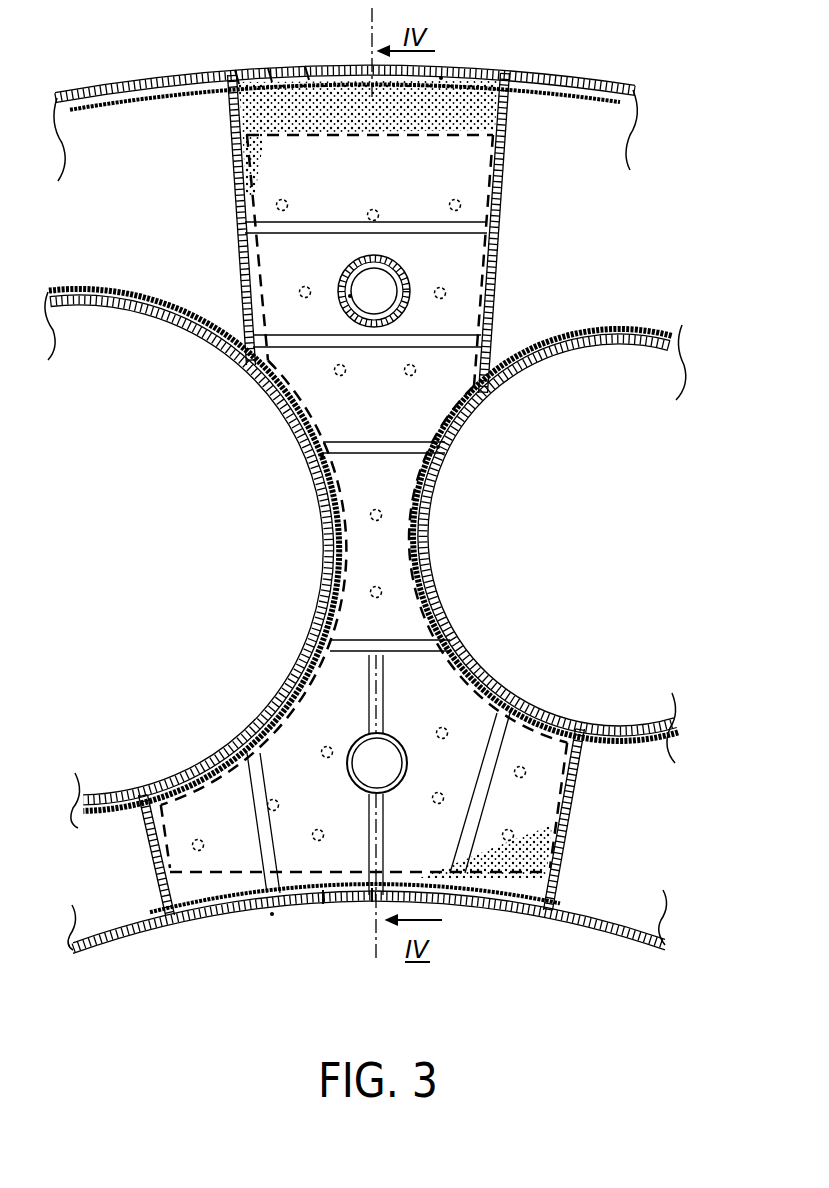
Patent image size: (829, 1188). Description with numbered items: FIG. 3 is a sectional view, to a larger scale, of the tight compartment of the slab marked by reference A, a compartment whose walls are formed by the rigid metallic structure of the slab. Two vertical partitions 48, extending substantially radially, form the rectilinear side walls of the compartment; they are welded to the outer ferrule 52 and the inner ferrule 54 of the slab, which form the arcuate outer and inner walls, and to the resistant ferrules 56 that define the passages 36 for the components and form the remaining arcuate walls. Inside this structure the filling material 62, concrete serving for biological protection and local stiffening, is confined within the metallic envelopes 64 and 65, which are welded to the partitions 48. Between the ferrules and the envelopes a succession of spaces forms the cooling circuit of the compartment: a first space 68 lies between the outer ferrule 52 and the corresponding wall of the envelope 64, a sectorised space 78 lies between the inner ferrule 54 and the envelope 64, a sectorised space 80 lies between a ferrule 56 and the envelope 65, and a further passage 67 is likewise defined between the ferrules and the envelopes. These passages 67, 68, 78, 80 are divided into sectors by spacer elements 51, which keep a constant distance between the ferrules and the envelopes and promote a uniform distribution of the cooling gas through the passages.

The tight compartment A is at (233, 78).
The passage 36 is at (665, 336).
The partition 48 is at (500, 140).
The spacer element 51 is at (441, 78).
The outer ferrule 52 is at (598, 82).
The inner ferrule 54 is at (224, 914).
The resistant ferrule 56 is at (180, 318).
The filling material 62 is at (285, 162).
The metallic envelope 64 is at (470, 76).
The metallic envelope 65 is at (448, 412).
The passage 67 is at (330, 612).
The first space 68 is at (238, 76).
The sectorised space 78 is at (372, 904).
The sectorised space 80 is at (395, 272).